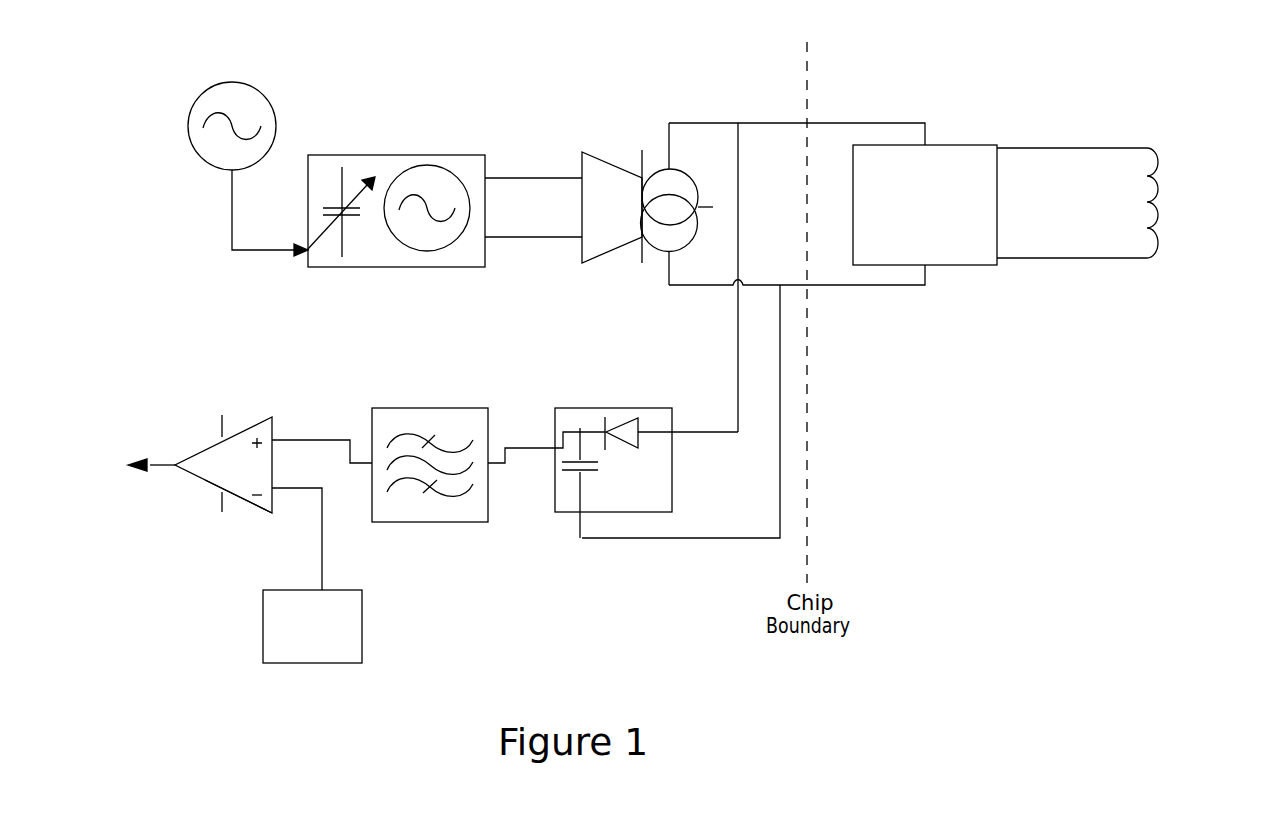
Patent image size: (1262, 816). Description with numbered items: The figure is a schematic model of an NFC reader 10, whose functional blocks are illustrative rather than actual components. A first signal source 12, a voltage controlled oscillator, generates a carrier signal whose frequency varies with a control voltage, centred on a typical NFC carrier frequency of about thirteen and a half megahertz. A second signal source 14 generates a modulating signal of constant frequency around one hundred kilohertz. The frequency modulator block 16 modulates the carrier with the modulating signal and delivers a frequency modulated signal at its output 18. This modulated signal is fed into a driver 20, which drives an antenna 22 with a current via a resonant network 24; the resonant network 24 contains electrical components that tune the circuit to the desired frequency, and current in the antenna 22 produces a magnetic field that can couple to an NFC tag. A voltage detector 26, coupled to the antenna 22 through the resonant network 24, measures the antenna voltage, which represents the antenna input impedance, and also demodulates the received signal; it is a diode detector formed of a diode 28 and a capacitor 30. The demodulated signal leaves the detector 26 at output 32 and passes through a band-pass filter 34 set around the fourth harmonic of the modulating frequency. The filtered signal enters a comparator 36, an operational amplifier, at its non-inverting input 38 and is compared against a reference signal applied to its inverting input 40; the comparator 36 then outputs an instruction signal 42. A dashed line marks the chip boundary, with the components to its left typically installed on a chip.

The NFC reader 10 is at (590, 68).
The first signal source 12 is at (435, 253).
The second signal source 14 is at (262, 100).
The frequency modulator block 16 is at (340, 168).
The output 18 is at (533, 207).
The driver 20 is at (640, 233).
The antenna 22 is at (1152, 170).
The resonant network 24 is at (982, 268).
The voltage detector 26 is at (562, 512).
The diode 28 is at (625, 428).
The capacitor 30 is at (597, 477).
The demodulated signal output 32 is at (546, 441).
The band-pass filter 34 is at (473, 525).
The comparator 36 is at (205, 475).
The non-inverting input 38 is at (280, 423).
The inverting input 40 is at (308, 493).
The instruction signal 42 is at (135, 468).